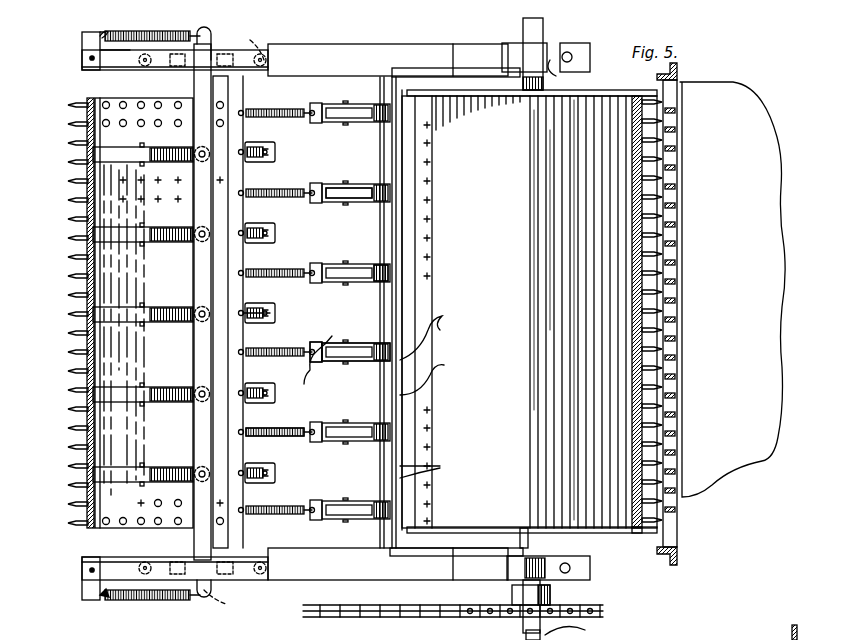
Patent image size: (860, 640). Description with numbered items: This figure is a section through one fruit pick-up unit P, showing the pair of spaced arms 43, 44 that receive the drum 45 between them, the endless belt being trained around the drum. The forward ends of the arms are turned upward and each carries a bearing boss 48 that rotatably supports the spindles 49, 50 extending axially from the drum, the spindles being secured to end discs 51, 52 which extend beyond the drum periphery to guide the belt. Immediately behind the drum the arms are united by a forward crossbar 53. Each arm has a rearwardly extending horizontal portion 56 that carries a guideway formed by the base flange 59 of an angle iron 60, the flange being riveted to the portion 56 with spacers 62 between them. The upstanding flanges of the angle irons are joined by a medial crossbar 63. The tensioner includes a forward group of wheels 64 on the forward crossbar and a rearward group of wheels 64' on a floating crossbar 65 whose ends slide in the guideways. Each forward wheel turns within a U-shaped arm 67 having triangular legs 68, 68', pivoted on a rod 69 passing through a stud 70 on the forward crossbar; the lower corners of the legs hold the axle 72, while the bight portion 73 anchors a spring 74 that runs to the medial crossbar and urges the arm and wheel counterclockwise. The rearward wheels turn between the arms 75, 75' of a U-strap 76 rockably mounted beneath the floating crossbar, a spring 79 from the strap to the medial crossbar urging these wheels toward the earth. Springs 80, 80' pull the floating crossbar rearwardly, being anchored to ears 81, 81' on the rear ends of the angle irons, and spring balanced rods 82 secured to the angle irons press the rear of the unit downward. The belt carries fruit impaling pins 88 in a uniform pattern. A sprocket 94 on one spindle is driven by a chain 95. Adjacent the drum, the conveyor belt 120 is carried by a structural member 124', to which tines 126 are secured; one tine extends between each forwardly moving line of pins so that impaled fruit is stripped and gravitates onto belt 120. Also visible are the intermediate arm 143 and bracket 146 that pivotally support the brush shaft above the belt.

The arm 43 is at (398, 44).
The arm 44 is at (394, 602).
The drum 45 is at (480, 304).
The bearing boss 48 is at (558, 72).
The spindle 49 is at (543, 28).
The spindle 50 is at (540, 548).
The end disc 51 is at (622, 90).
The end disc 52 is at (624, 536).
The forward crossbar 53 is at (410, 322).
The rearwardly extending horizontally disposed portion 56 is at (334, 69).
The base flange 59 is at (115, 60).
The angle iron 60 is at (79, 75).
The spacer 62 is at (140, 64).
The medial crossbar 63 is at (240, 218).
The wheel 64 is at (356, 382).
The wheel 64' is at (159, 313).
The floating crossbar 65 is at (202, 262).
The U-shaped arm 67 is at (317, 402).
The triangularly shaped leg 68 is at (347, 230).
The triangularly shaped leg 68' is at (352, 293).
The rod 69 is at (411, 226).
The stud 70 is at (430, 359).
The axle 72 is at (430, 471).
The bight portion 73 is at (312, 440).
The spring 74 is at (282, 428).
The arm 75 is at (151, 234).
The arm 75' is at (151, 403).
The U-strap 76 is at (276, 244).
The spring 79 is at (255, 325).
The spring 80 is at (155, 34).
The spring 80' is at (158, 606).
The ear 81 is at (66, 24).
The ear 81' is at (71, 608).
The spring balanced rod 82 is at (90, 57).
The fruit impaling pin 88 is at (66, 314).
The sprocket 94 is at (488, 602).
The chain 95 is at (335, 620).
The belt 120 is at (748, 267).
The structural member 124' is at (694, 317).
The tine 126 is at (672, 354).
The intermediate arm 143 is at (631, 633).
The bracket 146 is at (784, 638).
The unit P is at (696, 488).